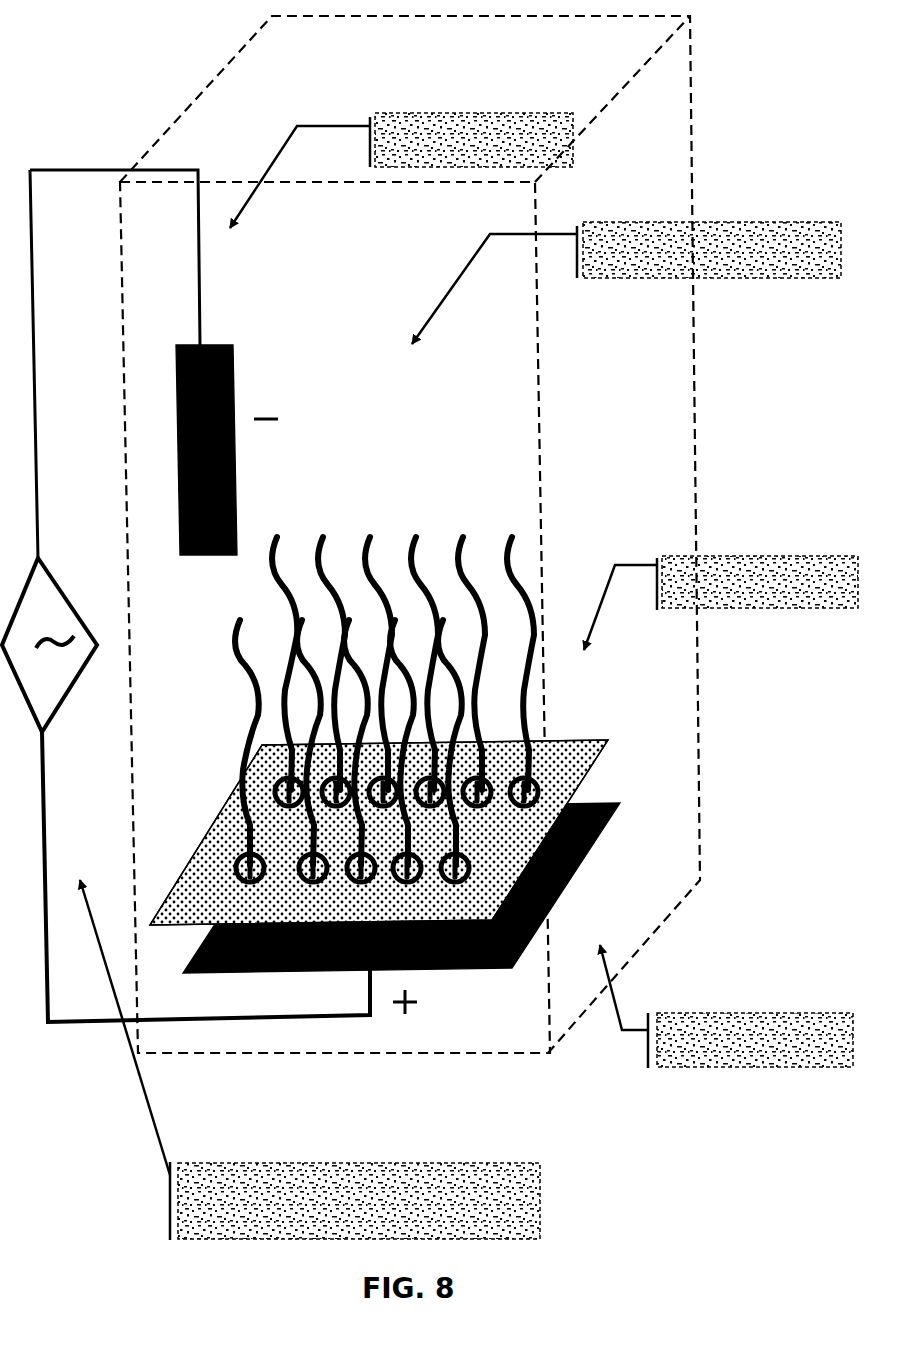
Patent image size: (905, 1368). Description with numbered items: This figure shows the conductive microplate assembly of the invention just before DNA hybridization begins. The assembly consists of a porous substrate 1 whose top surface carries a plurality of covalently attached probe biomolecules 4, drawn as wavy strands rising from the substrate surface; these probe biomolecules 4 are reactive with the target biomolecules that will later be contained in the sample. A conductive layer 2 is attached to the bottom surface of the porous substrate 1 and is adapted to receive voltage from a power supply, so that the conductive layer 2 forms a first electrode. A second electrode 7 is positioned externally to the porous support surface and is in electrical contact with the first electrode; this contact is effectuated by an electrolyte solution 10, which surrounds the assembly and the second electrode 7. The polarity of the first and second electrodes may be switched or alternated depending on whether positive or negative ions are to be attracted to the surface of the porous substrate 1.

The porous substrate 1 is at (598, 724).
The conductive layer 2 is at (590, 858).
The probe biomolecules 4 is at (541, 581).
The second electrode 7 is at (295, 341).
The electrolyte solution 10 is at (410, 534).